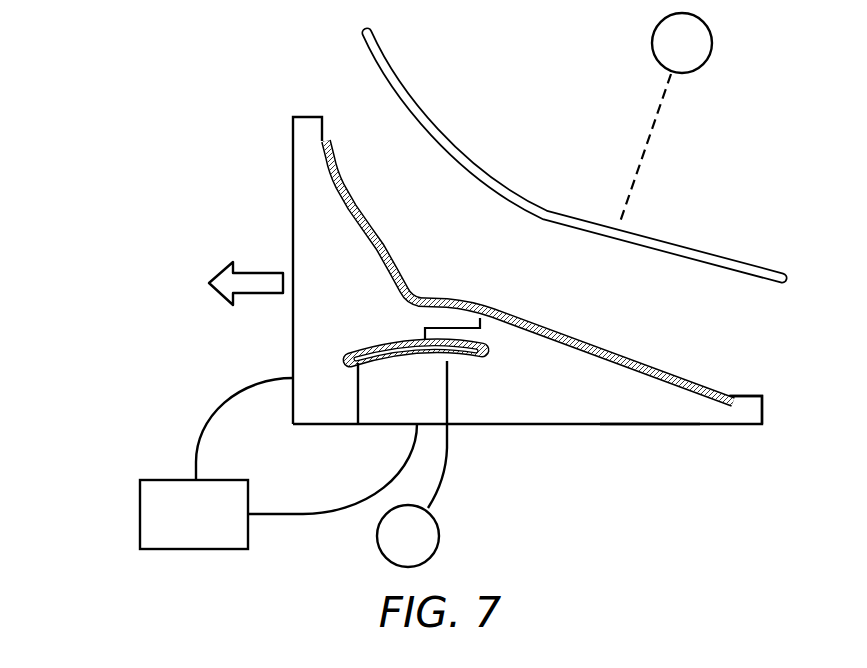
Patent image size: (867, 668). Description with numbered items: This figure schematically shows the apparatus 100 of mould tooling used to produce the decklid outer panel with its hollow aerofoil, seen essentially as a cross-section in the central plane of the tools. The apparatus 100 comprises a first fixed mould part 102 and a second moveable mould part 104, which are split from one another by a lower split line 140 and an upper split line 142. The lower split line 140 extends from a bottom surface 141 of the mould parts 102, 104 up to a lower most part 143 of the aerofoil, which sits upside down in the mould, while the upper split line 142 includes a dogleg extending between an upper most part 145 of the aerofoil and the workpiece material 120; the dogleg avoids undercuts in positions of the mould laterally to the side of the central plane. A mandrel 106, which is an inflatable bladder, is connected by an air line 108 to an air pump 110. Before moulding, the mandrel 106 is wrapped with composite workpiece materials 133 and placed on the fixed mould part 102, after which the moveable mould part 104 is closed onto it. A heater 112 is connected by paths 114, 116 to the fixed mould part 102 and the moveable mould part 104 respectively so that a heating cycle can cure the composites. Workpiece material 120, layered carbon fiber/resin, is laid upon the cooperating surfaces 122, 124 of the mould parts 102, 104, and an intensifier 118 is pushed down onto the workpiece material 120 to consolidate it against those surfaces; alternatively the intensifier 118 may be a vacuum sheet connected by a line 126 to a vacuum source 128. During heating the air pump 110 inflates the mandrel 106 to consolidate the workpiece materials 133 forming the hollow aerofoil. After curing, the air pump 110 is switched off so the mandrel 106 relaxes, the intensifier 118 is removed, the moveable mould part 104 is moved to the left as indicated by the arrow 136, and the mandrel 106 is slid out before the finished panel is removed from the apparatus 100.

The apparatus 100 is at (755, 480).
The first fixed mould part 102 is at (580, 410).
The second moveable mould part 104 is at (304, 137).
The mandrel 106 is at (353, 348).
The air line 108 is at (448, 452).
The air pump 110 is at (440, 532).
The heater 112 is at (140, 492).
The path 114 is at (303, 518).
The path 116 is at (200, 441).
The intensifier 118 is at (723, 254).
The workpiece material 120 is at (668, 378).
The cooperating surface 122 is at (692, 400).
The cooperating surface 124 is at (334, 183).
The line 126 is at (657, 112).
The vacuum source 128 is at (712, 40).
The composite workpiece materials 133 is at (487, 358).
The arrow 136 is at (254, 272).
The lower split line 140 is at (356, 410).
The bottom surface 141 is at (633, 425).
The upper split line 142 is at (450, 327).
The lower most part 143 is at (358, 376).
The upper most part 145 is at (416, 340).